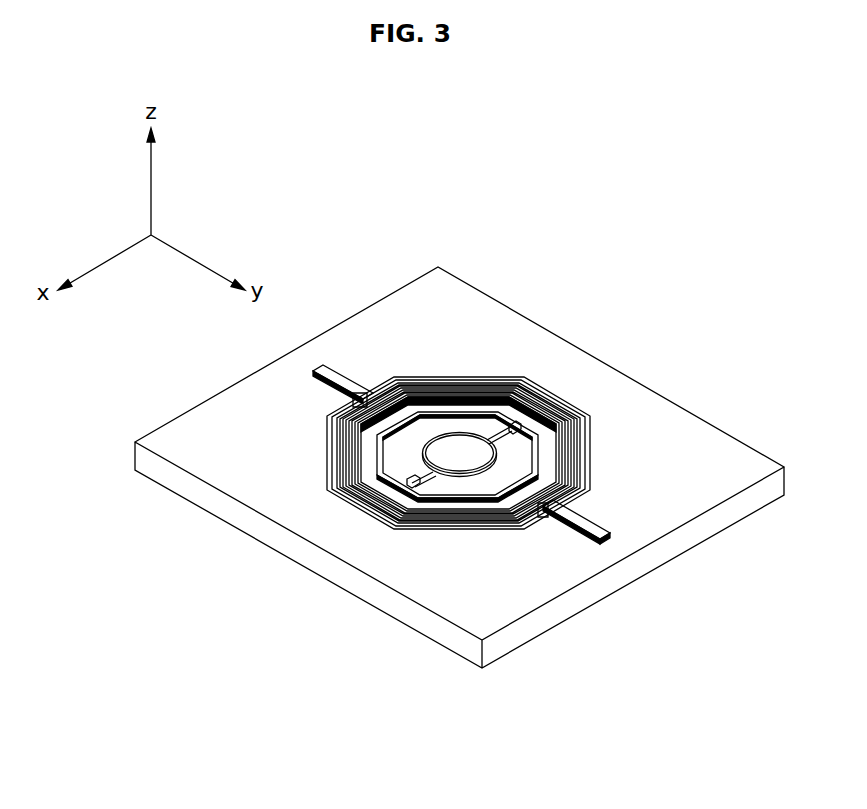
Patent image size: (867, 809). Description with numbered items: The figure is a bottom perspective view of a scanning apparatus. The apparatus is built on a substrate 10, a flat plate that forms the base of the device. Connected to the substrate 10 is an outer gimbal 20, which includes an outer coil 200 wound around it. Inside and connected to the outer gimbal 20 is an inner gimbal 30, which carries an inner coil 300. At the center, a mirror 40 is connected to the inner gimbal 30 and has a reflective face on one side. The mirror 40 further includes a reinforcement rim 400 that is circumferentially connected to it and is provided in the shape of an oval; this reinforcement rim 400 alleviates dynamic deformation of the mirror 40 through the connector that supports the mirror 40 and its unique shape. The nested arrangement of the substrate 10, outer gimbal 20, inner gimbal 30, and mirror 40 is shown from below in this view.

The substrate 10 is at (157, 428).
The outer gimbal 20 is at (553, 398).
The inner gimbal 30 is at (460, 493).
The mirror 40 is at (443, 455).
The outer coil 200 is at (382, 507).
The inner coil 300 is at (492, 403).
The reinforcement rim 400 is at (497, 456).